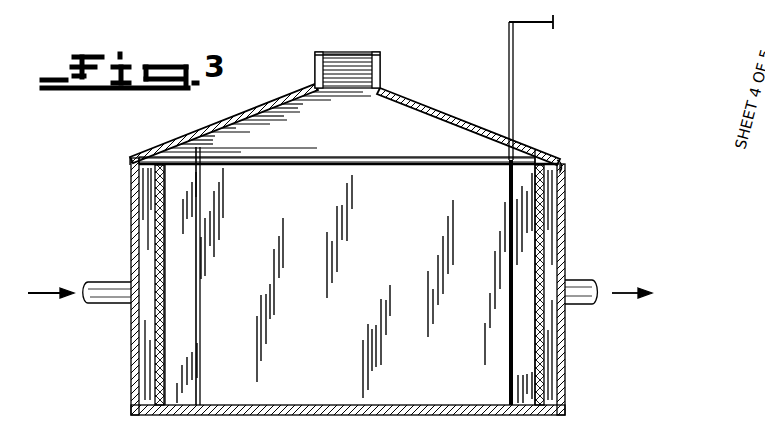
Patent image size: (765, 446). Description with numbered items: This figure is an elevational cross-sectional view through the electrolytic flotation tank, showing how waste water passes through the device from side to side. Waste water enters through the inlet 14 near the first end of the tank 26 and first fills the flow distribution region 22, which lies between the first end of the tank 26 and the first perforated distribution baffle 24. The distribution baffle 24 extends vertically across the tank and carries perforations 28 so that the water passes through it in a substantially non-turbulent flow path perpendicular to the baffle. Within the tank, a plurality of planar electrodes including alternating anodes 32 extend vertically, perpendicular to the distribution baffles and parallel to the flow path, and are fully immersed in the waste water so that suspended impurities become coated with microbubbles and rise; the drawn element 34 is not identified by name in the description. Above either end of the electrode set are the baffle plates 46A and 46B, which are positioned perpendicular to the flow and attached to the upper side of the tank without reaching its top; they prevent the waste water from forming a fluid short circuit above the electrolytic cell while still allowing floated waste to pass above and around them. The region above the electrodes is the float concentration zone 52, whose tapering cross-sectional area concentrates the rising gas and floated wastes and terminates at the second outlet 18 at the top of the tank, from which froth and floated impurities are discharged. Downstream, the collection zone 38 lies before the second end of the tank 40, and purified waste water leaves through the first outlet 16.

The inlet 14 is at (117, 303).
The first outlet 16 is at (583, 279).
The second outlet 18 is at (350, 73).
The flow distribution region 22 is at (148, 255).
The first perforated distribution baffle 24 is at (157, 222).
The first end of the tank 26 is at (133, 393).
The perforations 28 is at (157, 182).
The anodes 32 is at (200, 198).
The ceiling plate 34 is at (268, 188).
The collection zone 38 is at (548, 213).
The second end of the tank 40 is at (563, 383).
The baffle plate 46A is at (185, 153).
The baffle plate 46B is at (520, 160).
The float concentration zone 52 is at (408, 128).